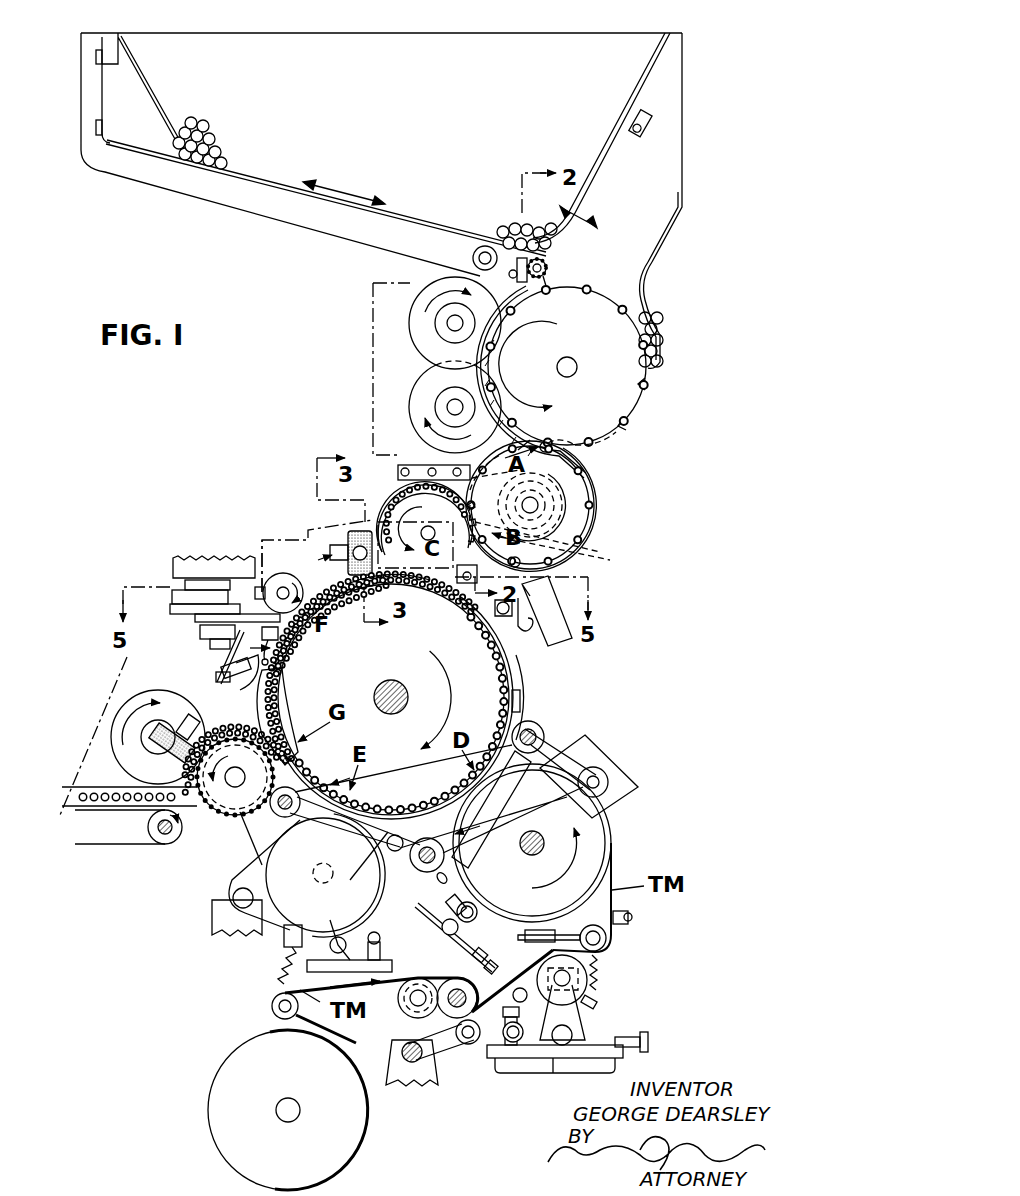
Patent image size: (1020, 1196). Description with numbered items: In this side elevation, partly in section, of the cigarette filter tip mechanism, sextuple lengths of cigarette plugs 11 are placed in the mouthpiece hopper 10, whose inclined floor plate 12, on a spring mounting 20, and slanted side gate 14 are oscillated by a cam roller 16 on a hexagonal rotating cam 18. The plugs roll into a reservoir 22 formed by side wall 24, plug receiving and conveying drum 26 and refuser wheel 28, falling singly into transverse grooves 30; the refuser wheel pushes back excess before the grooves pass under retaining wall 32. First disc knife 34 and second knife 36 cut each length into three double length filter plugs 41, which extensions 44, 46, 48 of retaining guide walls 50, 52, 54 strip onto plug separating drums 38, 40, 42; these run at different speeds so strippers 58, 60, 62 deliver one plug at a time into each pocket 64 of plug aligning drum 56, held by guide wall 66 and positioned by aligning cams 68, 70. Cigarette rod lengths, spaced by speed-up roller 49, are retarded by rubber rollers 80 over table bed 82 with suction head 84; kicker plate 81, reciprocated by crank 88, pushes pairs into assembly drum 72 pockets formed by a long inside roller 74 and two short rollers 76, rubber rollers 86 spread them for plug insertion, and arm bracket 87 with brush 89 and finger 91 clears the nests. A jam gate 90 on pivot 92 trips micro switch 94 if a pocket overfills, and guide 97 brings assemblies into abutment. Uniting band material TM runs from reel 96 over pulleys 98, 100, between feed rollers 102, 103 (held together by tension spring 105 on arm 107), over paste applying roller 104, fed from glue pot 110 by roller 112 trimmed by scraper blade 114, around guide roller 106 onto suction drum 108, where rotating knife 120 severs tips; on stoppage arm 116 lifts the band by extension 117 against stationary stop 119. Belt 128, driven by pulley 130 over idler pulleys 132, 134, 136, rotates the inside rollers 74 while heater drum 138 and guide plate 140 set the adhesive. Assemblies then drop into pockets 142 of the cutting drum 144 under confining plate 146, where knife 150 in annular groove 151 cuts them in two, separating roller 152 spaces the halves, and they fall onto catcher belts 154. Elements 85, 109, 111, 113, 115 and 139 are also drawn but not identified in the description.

The mouthpiece hopper 10 is at (280, 162).
The cigarette plugs 11 is at (205, 140).
The inclined floor plate 12 is at (332, 198).
The slanted side gate 14 is at (598, 176).
The cam roller 16 is at (478, 262).
The hexagonal rotating cam 18 is at (547, 262).
The spring mounting 20 is at (97, 100).
The reservoir 22 is at (645, 292).
The side wall 24 is at (668, 232).
The plug receiving and conveying drum 26 is at (625, 395).
The refuser wheel 28 is at (550, 275).
The plug receiving grooves 30 is at (642, 383).
The retaining wall 32 is at (492, 320).
The first rotating disc knife 34 is at (430, 330).
The second cutting knife 36 is at (425, 395).
The plug separating drum 38 is at (578, 512).
The plug separating drum 40 is at (530, 505).
The double length filter plugs 41 is at (536, 438).
The plug separating drum 42 is at (530, 505).
The extension of retaining guide wall 44 is at (575, 445).
The extension of retaining guide wall 46 is at (561, 442).
The extension of retaining guide wall 48 is at (595, 438).
The speed-up roller 49 is at (283, 568).
The double length retaining guide wall 50 is at (596, 490).
The double length retaining guide wall 52 is at (485, 472).
The double length retaining guide wall 54 is at (472, 522).
The plug aligning drum 56 is at (465, 512).
The stripper 58 is at (595, 541).
The stripper 60 is at (555, 548).
The stripper 62 is at (496, 474).
The pockets 64 is at (528, 555).
The guide wall 66 is at (416, 465).
The plug aligning cam 68 is at (346, 478).
The plug aligning cam 70 is at (449, 497).
The cigarette assembly drum 72 is at (492, 695).
The inside roller 74 is at (340, 598).
The short roller 76 is at (456, 600).
The rubber rollers 80 is at (285, 572).
The kicker plate 81 is at (205, 619).
The table bed 82 is at (280, 636).
The suction head 84 is at (290, 652).
The guide 85 is at (432, 598).
The rubber rollers 86 is at (352, 540).
The arm bracket 87 is at (205, 640).
The crank 88 is at (185, 600).
The brush 89 is at (222, 655).
The jam gate 90 is at (516, 684).
The finger 91 is at (240, 690).
The pivot 92 is at (525, 625).
The micro switch 94 is at (562, 605).
The reel 96 is at (235, 1090).
The guide 97 is at (512, 690).
The pulley 98 is at (272, 1006).
The pulley 100 is at (410, 1012).
The feed roller 102 is at (455, 978).
The feed roller 103 is at (468, 1046).
The paste applying roller 104 is at (590, 983).
The tension spring 105 is at (600, 972).
The guide roller 106 is at (607, 938).
The arm 107 is at (598, 1003).
The band conveying suction drum 108 is at (590, 835).
The bracket 109 is at (500, 925).
The glue pot 110 is at (545, 1062).
The pivot 111 is at (475, 905).
The roller 112 is at (585, 1030).
The rod 113 is at (428, 905).
The adjustable scraper blade 114 is at (598, 1060).
The cylinder 115 is at (470, 895).
The arm 116 is at (456, 944).
The band engaging extension 117 is at (520, 985).
The stationary stop 119 is at (538, 930).
The rotating cutting knife 120 is at (604, 752).
The belt 128 is at (600, 797).
The drive pulley 130 is at (610, 781).
The idler pulley 132 is at (546, 733).
The idler pulley 134 is at (265, 870).
The idler pulley 136 is at (427, 872).
The heater drum 138 is at (372, 905).
The pivot 139 is at (236, 898).
The guide plate 140 is at (310, 899).
The pockets 142 is at (232, 816).
The cutting drum 144 is at (245, 820).
The confining plate 146 is at (262, 730).
The rotating knife 150 is at (118, 732).
The annular groove 151 is at (292, 818).
The separating roller 152 is at (165, 740).
The catcher belts 154 is at (110, 845).